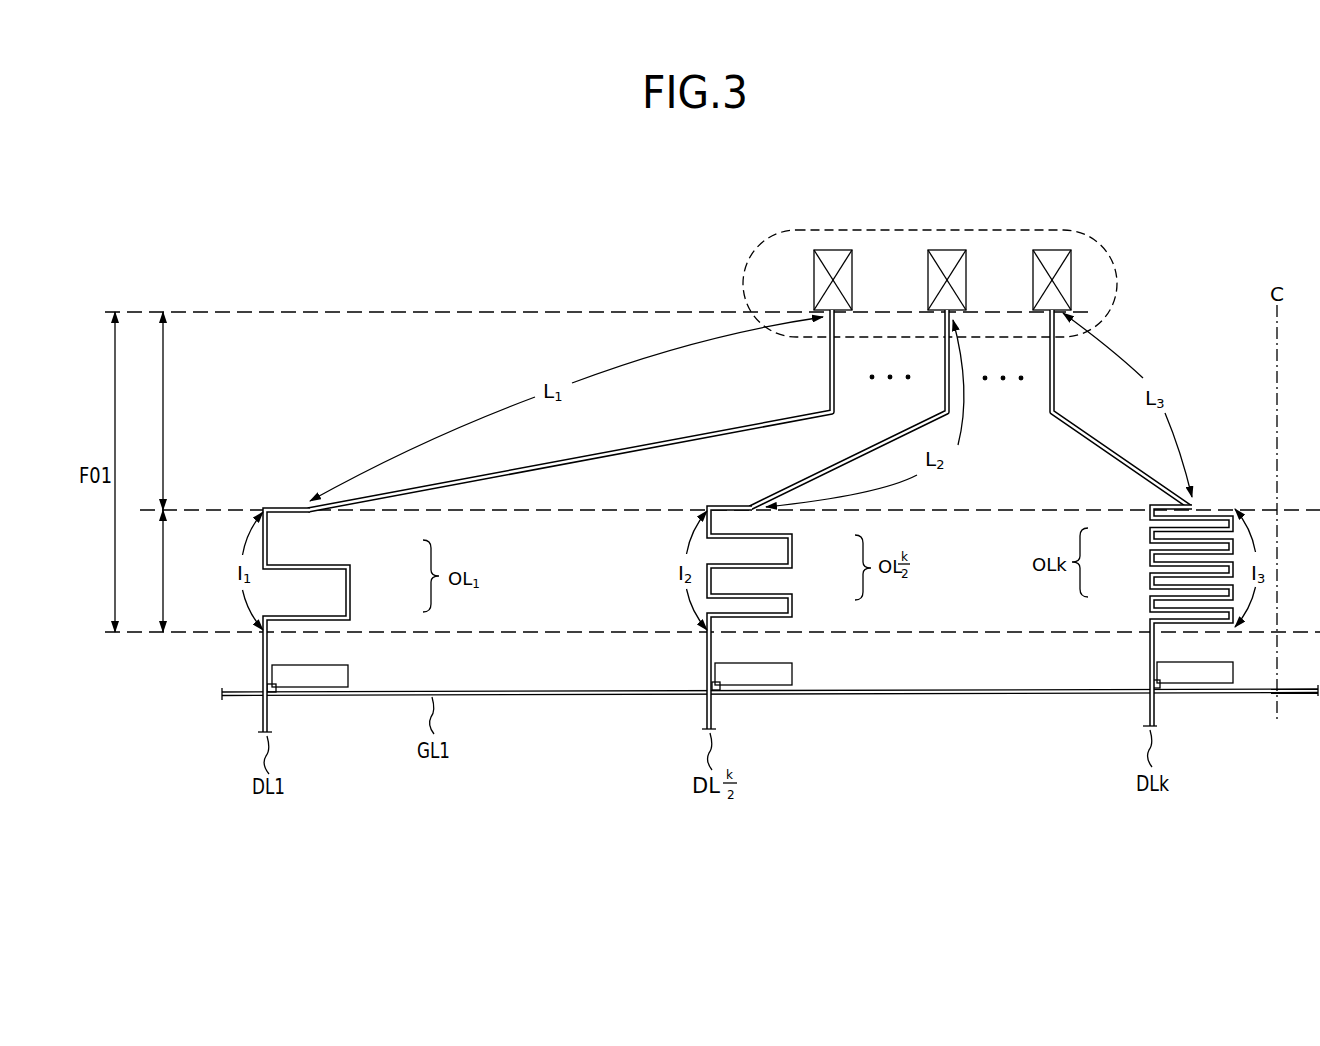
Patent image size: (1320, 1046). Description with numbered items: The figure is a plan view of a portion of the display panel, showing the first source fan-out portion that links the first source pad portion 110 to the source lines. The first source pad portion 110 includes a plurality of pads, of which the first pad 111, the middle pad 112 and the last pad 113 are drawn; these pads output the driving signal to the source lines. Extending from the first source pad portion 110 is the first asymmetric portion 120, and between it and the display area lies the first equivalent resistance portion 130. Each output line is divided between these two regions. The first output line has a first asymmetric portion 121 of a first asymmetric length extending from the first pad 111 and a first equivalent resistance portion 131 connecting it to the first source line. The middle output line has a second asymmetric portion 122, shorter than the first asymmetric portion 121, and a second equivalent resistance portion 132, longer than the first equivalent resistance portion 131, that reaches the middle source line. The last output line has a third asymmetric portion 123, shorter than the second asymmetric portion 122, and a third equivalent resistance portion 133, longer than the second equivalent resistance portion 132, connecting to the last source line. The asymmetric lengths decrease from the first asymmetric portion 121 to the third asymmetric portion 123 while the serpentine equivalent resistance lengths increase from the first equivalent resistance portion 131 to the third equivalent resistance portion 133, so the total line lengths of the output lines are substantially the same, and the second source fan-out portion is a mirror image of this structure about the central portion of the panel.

The first source pad portion 110 is at (1095, 243).
The first pad 111 is at (814, 277).
The k/2-th pad 112 is at (928, 277).
The k-th pad 113 is at (1033, 277).
The first asymmetric portion 120 is at (143, 411).
The first asymmetric portion 121 is at (410, 490).
The second asymmetric portion 122 is at (797, 487).
The third asymmetric portion 123 is at (1112, 460).
The first equivalent resistance portion 130 is at (143, 571).
The first equivalent resistance portion 131 is at (350, 602).
The second equivalent resistance portion 132 is at (790, 565).
The third equivalent resistance portion 133 is at (1150, 578).